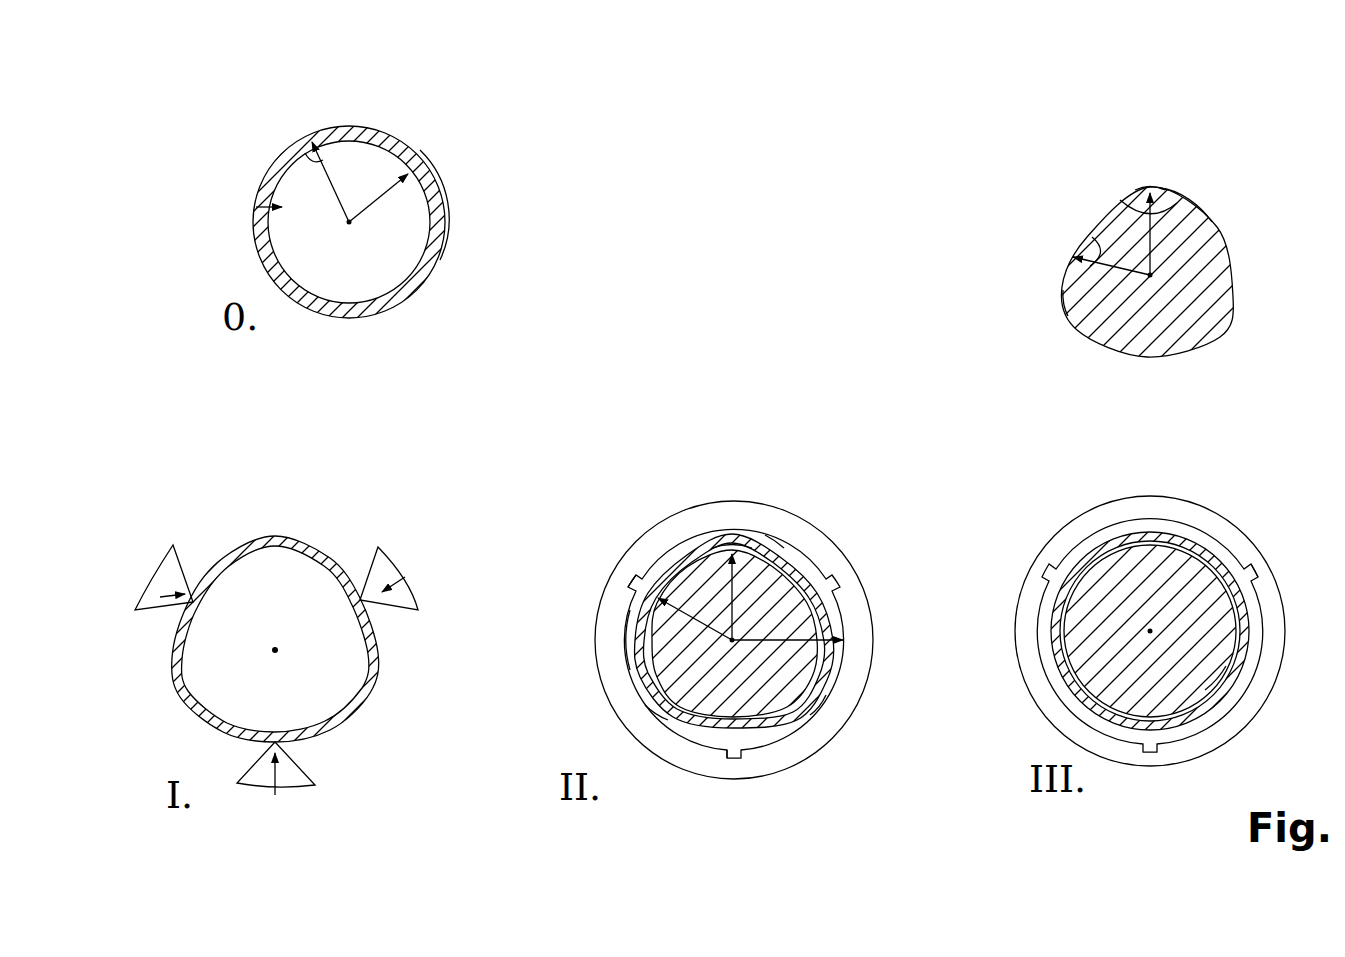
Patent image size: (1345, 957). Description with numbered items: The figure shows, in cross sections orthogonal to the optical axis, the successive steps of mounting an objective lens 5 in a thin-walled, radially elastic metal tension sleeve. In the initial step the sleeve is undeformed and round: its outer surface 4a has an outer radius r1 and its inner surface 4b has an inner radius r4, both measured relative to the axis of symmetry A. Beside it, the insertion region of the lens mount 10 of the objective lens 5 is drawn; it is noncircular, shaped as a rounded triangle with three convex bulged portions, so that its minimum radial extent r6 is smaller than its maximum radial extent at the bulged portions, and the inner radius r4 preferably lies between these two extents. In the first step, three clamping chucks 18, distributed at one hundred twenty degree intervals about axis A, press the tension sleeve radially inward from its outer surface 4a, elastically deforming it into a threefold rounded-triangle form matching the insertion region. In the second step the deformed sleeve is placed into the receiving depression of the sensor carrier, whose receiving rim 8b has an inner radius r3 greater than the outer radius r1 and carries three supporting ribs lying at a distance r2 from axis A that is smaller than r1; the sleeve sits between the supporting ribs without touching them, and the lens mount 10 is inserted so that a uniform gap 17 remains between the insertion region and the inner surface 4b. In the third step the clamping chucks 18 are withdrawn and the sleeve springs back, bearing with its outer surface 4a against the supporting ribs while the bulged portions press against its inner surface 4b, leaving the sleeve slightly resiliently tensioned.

The outer surface of tension sleeve 4a is at (445, 237).
The inner surface of tension sleeve 4b is at (268, 208).
The outer radius of tension sleeve r1 is at (310, 143).
The inner radius of tension sleeve r4 is at (386, 180).
The objective lens 5 is at (1210, 228).
The lens mount 10 is at (1190, 198).
The minimum radial extent of insertion region r6 is at (1098, 237).
The clamping chucks 18 is at (162, 595).
The gap 17 is at (710, 550).
The receiving rim 8b is at (625, 646).
The distance of supporting ribs to axis of symmetry r2 is at (655, 600).
The inner radius of receiving rim r3 is at (832, 652).